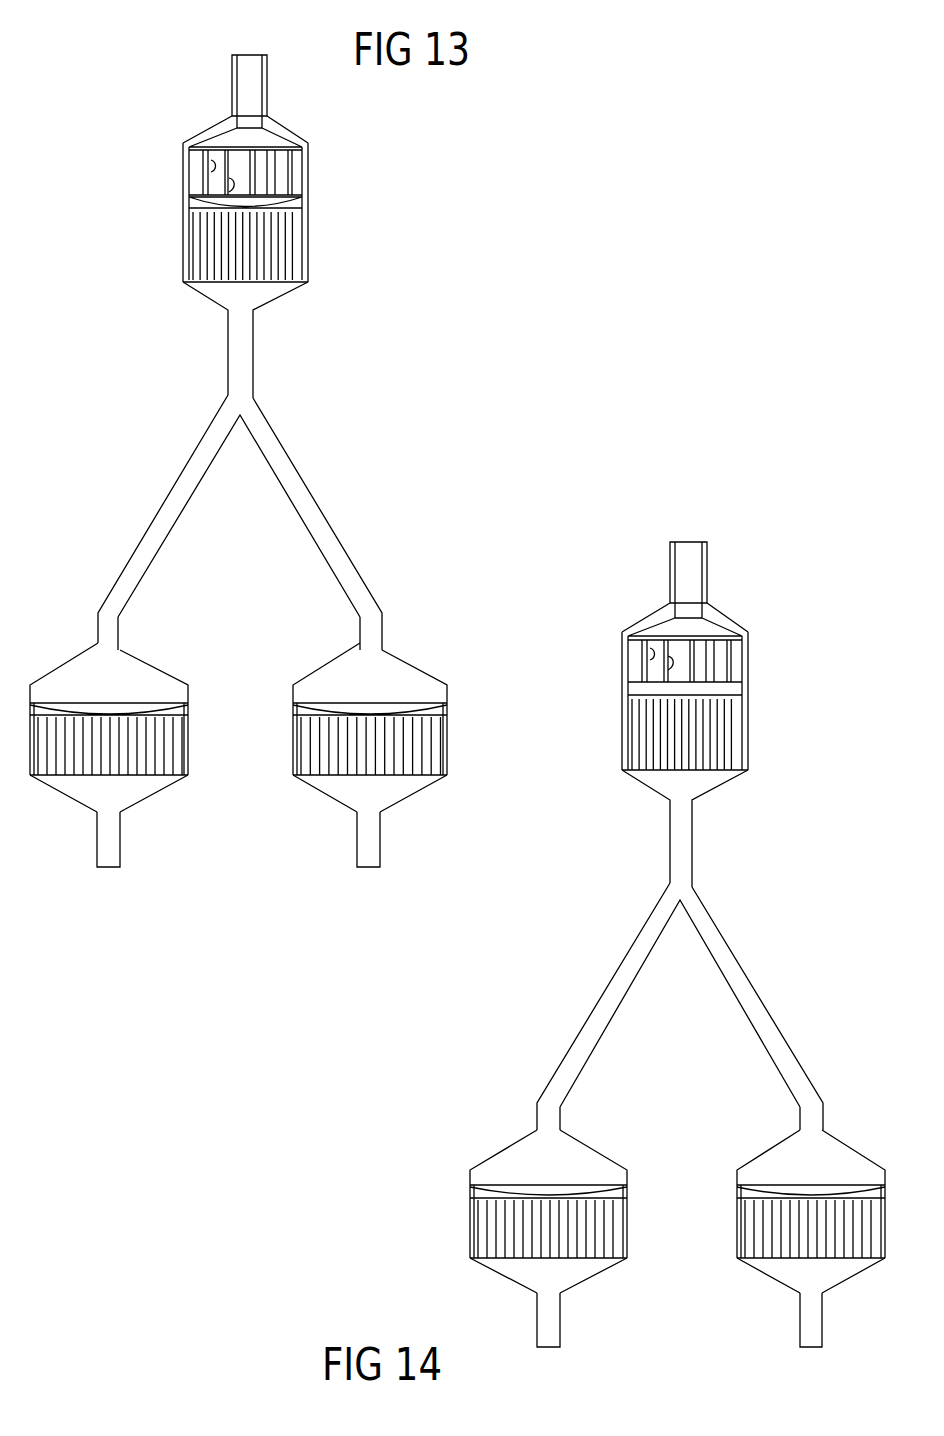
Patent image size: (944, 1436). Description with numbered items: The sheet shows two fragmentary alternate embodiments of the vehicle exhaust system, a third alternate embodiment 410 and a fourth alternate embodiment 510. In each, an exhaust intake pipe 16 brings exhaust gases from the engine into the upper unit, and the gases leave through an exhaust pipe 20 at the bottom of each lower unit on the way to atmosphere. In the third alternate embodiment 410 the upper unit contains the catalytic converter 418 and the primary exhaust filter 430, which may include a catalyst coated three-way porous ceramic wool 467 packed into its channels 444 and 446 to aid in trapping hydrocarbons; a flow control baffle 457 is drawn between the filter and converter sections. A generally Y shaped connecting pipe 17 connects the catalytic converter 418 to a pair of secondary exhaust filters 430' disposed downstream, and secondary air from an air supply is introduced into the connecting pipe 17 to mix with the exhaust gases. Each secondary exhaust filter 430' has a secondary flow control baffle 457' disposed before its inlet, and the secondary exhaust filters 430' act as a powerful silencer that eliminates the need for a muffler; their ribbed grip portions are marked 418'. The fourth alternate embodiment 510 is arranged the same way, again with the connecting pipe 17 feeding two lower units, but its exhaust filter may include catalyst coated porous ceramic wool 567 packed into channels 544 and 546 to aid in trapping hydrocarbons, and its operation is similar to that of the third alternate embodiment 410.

In FIG. 13, the exhaust intake pipe 16 is at (268, 92).
In FIG. 14, the exhaust intake pipe 16 is at (707, 558).
In FIG. 13, the Y shaped connecting pipe 17 is at (318, 497).
In FIG. 14, the Y shaped connecting pipe 17 is at (757, 990).
In FIG. 13, the exhaust pipe 20 is at (120, 838).
In FIG. 14, the exhaust pipe 20 is at (560, 1310).
In FIG. 13, the third alternate embodiment of the exhaust system 410 is at (340, 375).
In FIG. 14, the fourth alternate embodiment of the exhaust system 510 is at (754, 837).
In FIG. 13, the catalytic converter 418 is at (293, 247).
In FIG. 14, the catalytic converter 418 is at (746, 734).
In FIG. 14, the ribbed grip portion of lower connector 418' is at (693, 1258).
In FIG. 13, the primary exhaust filter 430 is at (302, 199).
In FIG. 14, the primary exhaust filter 430 is at (749, 686).
In FIG. 13, the secondary exhaust filter 430' is at (295, 728).
In FIG. 13, the channel 444 is at (235, 183).
In FIG. 13, the channel 446 is at (213, 165).
In FIG. 13, the seal band 457 is at (304, 202).
In FIG. 13, the secondary flow control baffle 457' is at (271, 666).
In FIG. 14, the secondary flow control baffle 457' is at (689, 1135).
In FIG. 13, the catalyst coated porous ceramic wool 467 is at (242, 153).
In FIG. 14, the channel 544 is at (673, 658).
In FIG. 14, the channel 546 is at (645, 643).
In FIG. 14, the catalyst coated porous ceramic wool 567 is at (718, 643).